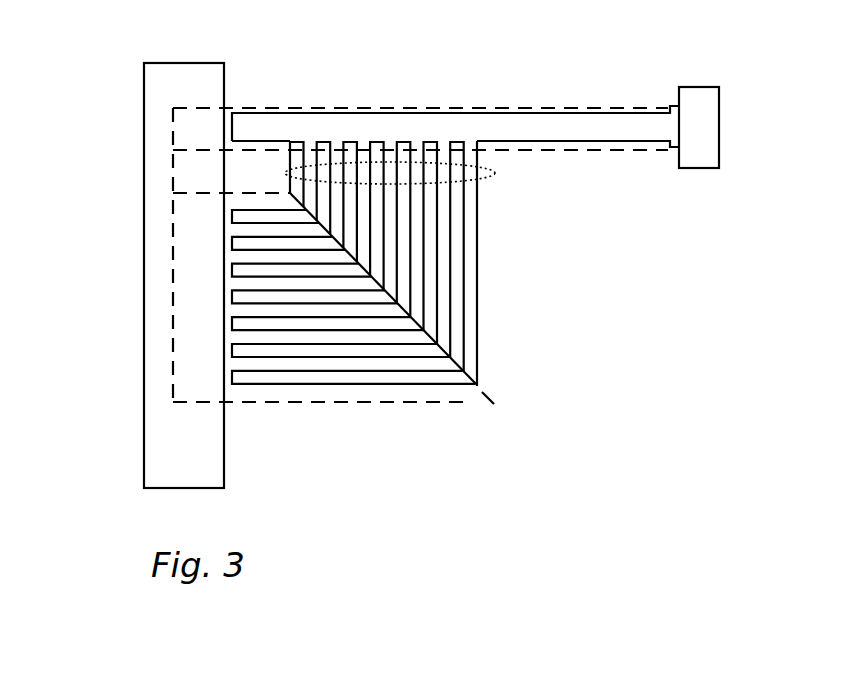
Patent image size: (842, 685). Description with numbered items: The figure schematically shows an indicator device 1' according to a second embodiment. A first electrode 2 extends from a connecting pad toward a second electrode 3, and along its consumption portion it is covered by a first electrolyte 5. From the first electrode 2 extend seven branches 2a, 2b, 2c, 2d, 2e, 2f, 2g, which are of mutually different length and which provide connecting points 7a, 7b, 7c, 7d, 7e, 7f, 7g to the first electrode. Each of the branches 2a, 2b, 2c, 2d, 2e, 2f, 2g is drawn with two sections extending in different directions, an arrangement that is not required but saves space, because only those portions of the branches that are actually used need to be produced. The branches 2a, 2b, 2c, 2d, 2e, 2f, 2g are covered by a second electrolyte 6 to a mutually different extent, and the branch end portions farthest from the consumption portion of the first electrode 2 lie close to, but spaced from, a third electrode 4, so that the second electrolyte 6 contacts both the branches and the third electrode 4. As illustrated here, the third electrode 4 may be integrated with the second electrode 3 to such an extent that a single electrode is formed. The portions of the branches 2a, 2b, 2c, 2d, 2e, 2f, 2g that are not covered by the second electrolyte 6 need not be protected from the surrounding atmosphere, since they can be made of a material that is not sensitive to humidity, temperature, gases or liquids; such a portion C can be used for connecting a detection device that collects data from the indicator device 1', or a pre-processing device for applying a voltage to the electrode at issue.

The indicator device 1' is at (417, 254).
The first electrode 2 is at (720, 122).
The branch of the first electrode 2a is at (310, 200).
The branch of the first electrode 2b is at (337, 222).
The branch of the first electrode 2c is at (364, 243).
The branch of the first electrode 2d is at (392, 268).
The branch of the first electrode 2e is at (420, 290).
The branch of the first electrode 2f is at (445, 313).
The branch of the first electrode 2g is at (470, 342).
The second electrode 3 is at (150, 147).
The third electrode 4 is at (159, 275).
The first electrolyte 5 is at (250, 108).
The second electrolyte 6 is at (470, 406).
The connecting point 7a is at (319, 219).
The connecting point 7b is at (345, 246).
The connecting point 7c is at (371, 273).
The connecting point 7d is at (397, 300).
The connecting point 7e is at (423, 327).
The connecting point 7f is at (449, 353).
The connecting point 7g is at (475, 380).
The portion not covered by the second electrolyte C is at (495, 173).